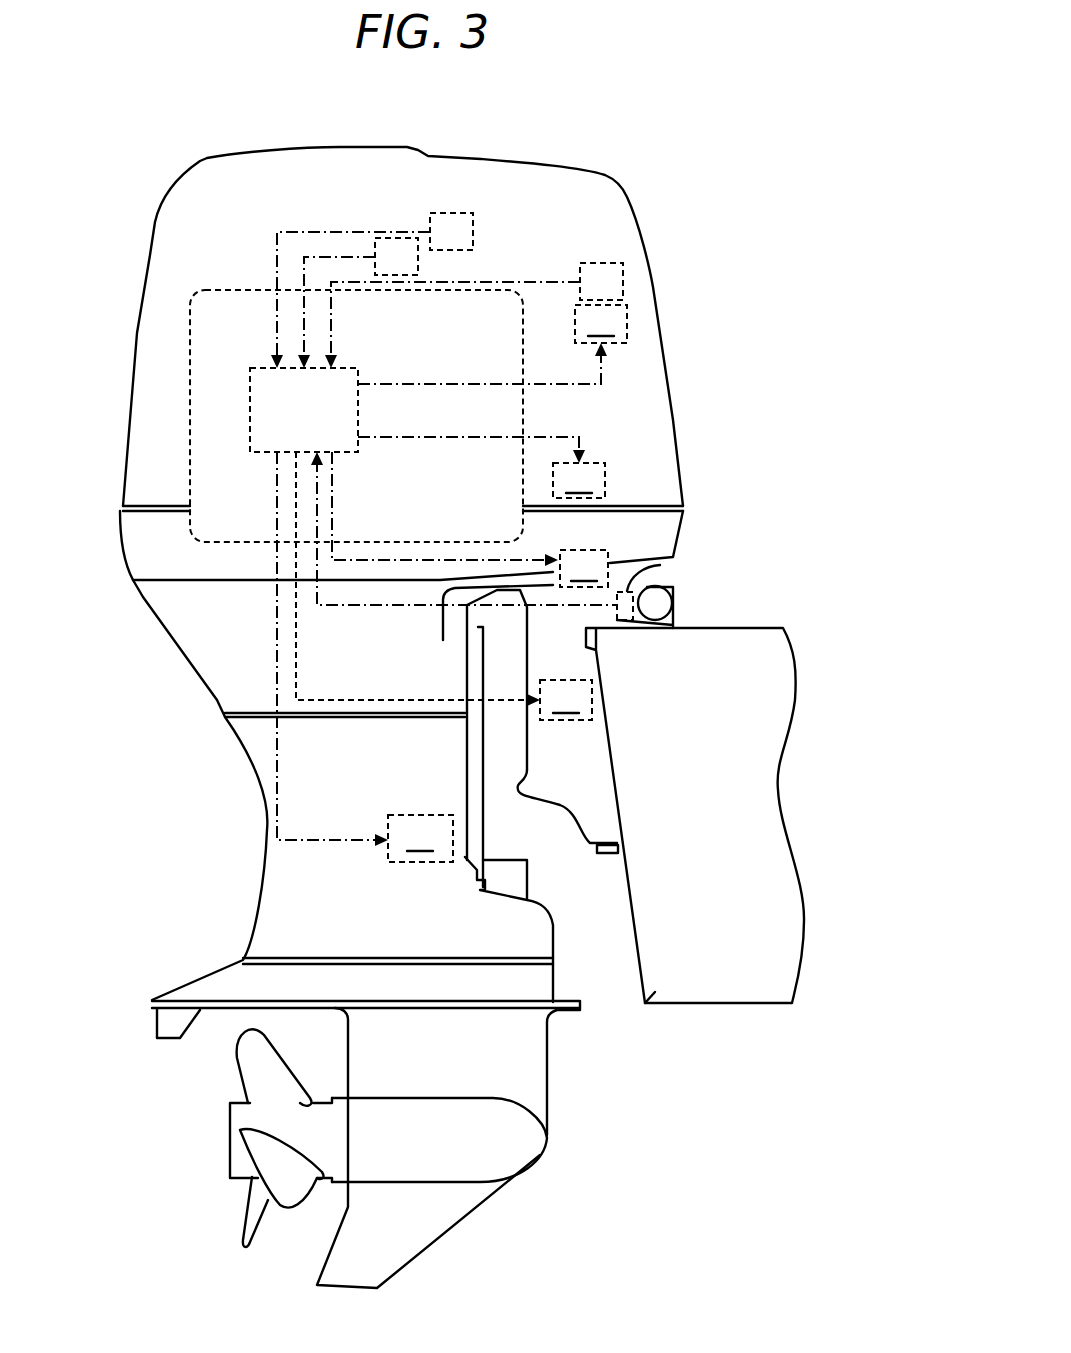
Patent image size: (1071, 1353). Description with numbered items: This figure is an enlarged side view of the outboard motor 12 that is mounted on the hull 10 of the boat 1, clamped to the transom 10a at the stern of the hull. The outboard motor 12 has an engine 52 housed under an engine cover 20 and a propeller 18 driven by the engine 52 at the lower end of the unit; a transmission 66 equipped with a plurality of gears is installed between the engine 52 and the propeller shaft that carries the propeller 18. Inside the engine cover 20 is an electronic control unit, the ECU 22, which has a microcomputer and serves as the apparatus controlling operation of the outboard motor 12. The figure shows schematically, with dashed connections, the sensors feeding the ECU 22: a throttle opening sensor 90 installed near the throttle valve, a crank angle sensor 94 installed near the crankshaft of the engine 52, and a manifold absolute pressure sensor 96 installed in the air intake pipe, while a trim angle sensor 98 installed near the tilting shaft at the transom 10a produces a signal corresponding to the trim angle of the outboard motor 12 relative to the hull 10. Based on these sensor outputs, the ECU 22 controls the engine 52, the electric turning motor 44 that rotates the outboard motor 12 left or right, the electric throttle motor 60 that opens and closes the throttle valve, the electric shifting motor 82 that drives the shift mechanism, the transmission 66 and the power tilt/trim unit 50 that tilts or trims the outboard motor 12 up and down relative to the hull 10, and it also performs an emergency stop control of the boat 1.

The boat 1 is at (797, 360).
The hull 10 is at (684, 1004).
The transom 10a is at (648, 1005).
The outboard motor 12 is at (627, 198).
The propeller 18 is at (248, 1208).
The engine cover 20 is at (147, 250).
The ECU 22 is at (250, 403).
The electric turning motor 44 is at (470, 519).
The power tilt/trim unit 50 is at (444, 586).
The engine 52 is at (190, 331).
The electric throttle motor 60 is at (492, 344).
The transmission 66 is at (365, 657).
The electric shifting motor 82 is at (481, 467).
The throttle opening sensor 90 is at (597, 263).
The crank angle sensor 94 is at (475, 231).
The manifold absolute pressure sensor 96 is at (420, 262).
The trim angle sensor 98 is at (633, 590).